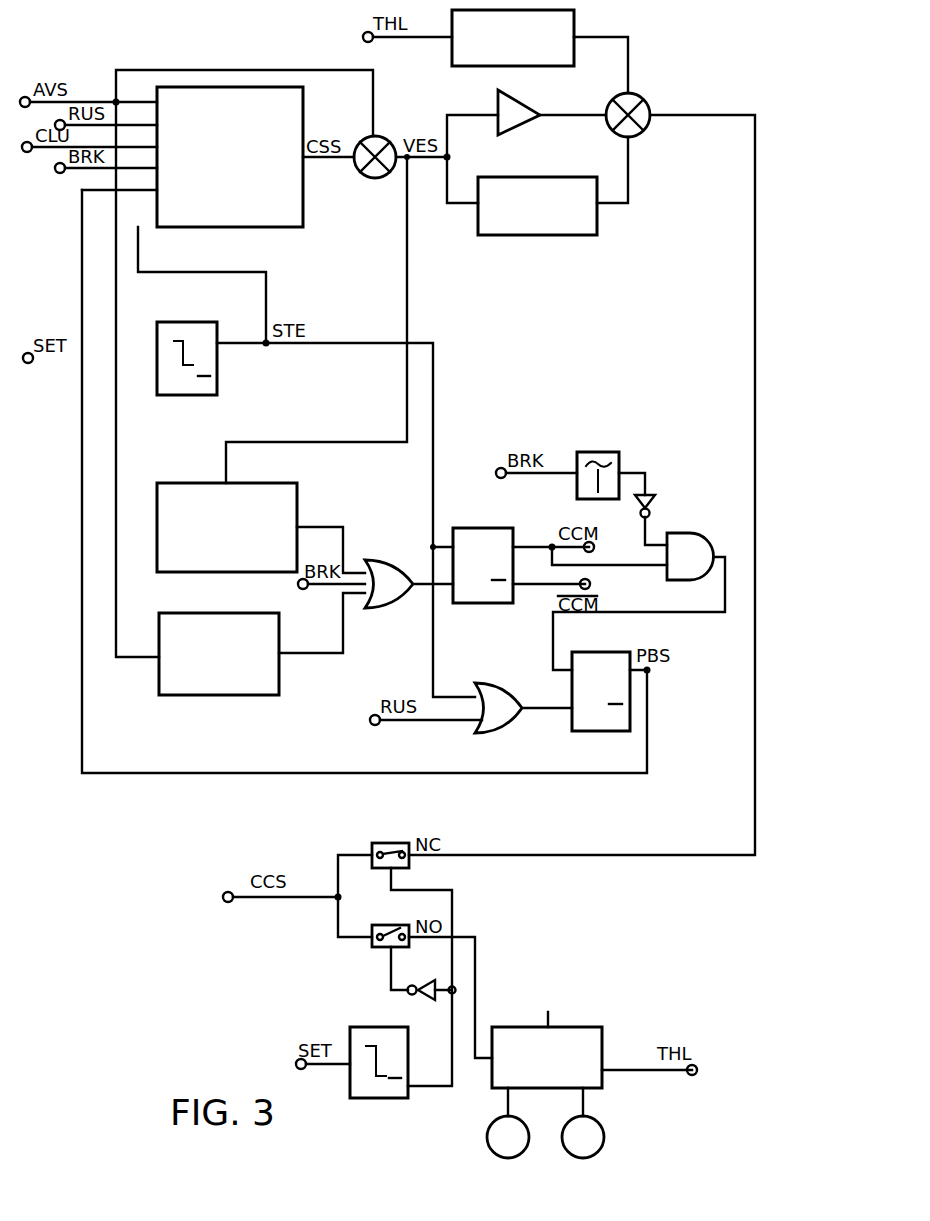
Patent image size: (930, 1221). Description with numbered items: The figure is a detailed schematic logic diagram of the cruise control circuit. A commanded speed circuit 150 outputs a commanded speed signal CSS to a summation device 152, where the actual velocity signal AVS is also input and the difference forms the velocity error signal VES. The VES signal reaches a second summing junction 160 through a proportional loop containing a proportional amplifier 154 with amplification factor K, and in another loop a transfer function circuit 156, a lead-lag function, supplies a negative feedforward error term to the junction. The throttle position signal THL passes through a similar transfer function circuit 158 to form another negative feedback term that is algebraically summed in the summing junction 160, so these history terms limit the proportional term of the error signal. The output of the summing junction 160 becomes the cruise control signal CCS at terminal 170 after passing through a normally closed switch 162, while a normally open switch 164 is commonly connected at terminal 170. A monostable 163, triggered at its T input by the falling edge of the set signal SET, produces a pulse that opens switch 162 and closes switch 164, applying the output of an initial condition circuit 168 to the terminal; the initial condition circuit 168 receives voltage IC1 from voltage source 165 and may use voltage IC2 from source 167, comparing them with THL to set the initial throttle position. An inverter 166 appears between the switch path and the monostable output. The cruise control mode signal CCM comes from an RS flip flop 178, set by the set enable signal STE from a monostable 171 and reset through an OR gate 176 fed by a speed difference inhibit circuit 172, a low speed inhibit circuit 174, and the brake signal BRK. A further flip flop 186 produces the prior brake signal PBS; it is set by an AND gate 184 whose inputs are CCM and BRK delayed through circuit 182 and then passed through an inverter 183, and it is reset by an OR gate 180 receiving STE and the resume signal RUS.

The commanded speed circuit 150 is at (302, 92).
The summation device 152 is at (372, 178).
The proportional amplifier 154 is at (517, 129).
The transfer function circuit 156 is at (560, 235).
The transfer function circuit 158 is at (570, 12).
The summing junction 160 is at (645, 100).
The normally closed switch 162 is at (393, 843).
The monostable 163 is at (375, 1098).
The normally open switch 164 is at (384, 925).
The voltage source 165 is at (490, 1152).
The inverter 166 is at (427, 984).
The source 167 is at (600, 1150).
The initial condition circuit 168 is at (548, 1027).
The terminal 170 is at (222, 897).
The monostable 171 is at (215, 392).
The speed difference inhibit circuit 172 is at (298, 492).
The low speed inhibit circuit 174 is at (273, 632).
The OR gate 176 is at (385, 563).
The RS flip flop 178 is at (478, 603).
The OR gate 180 is at (505, 722).
The delay circuit 182 is at (607, 452).
The inverter 183 is at (653, 500).
The AND gate 184 is at (692, 532).
The flip flop 186 is at (598, 655).